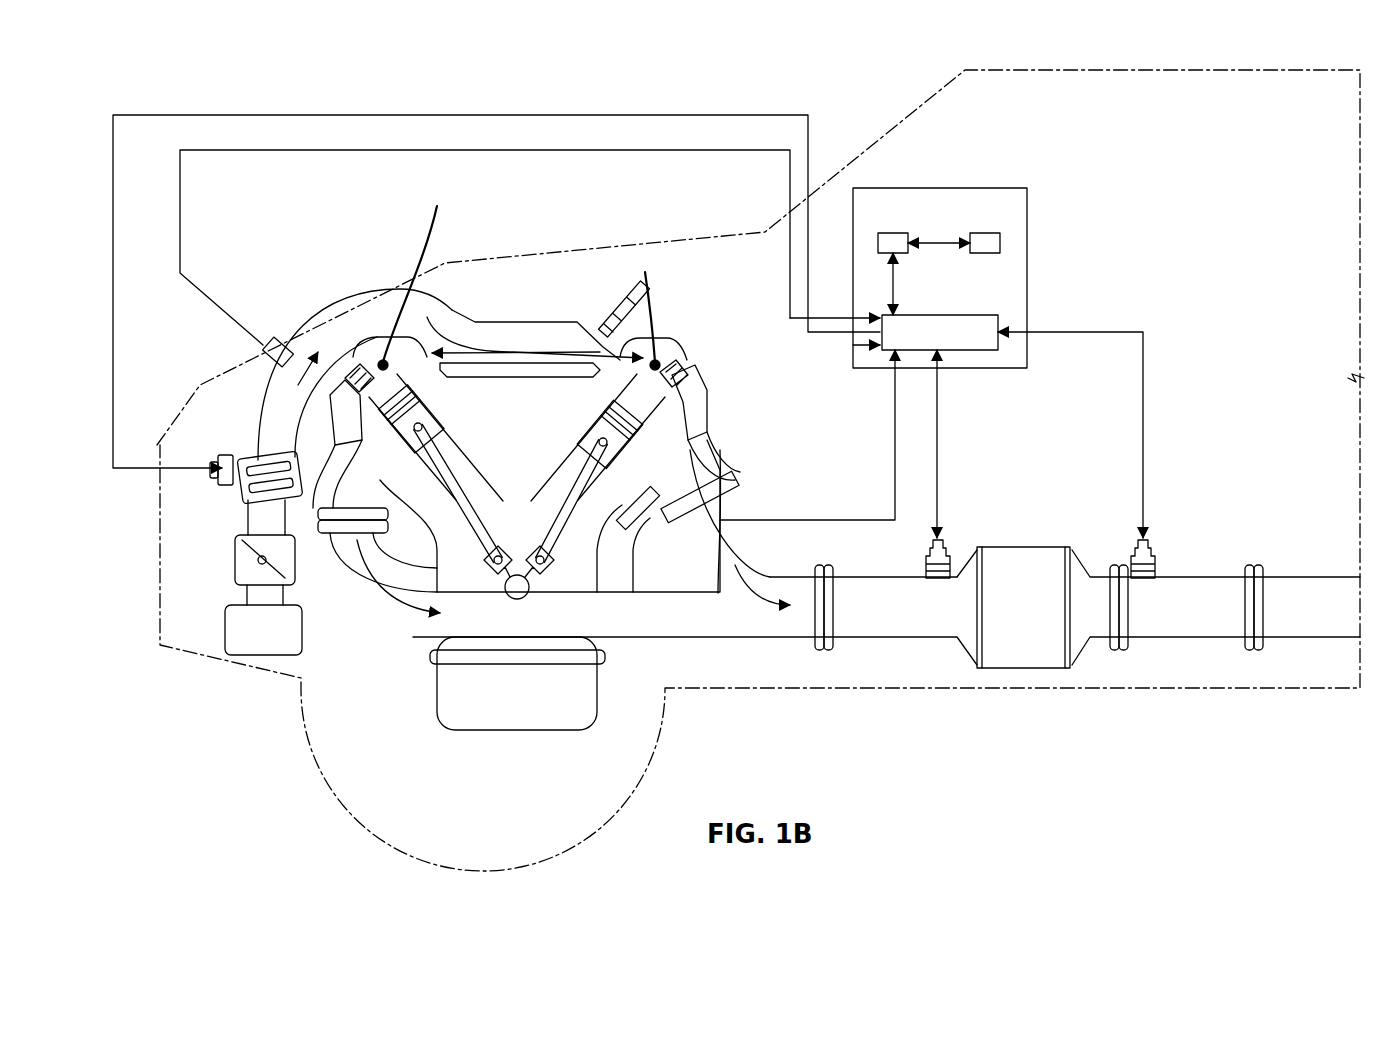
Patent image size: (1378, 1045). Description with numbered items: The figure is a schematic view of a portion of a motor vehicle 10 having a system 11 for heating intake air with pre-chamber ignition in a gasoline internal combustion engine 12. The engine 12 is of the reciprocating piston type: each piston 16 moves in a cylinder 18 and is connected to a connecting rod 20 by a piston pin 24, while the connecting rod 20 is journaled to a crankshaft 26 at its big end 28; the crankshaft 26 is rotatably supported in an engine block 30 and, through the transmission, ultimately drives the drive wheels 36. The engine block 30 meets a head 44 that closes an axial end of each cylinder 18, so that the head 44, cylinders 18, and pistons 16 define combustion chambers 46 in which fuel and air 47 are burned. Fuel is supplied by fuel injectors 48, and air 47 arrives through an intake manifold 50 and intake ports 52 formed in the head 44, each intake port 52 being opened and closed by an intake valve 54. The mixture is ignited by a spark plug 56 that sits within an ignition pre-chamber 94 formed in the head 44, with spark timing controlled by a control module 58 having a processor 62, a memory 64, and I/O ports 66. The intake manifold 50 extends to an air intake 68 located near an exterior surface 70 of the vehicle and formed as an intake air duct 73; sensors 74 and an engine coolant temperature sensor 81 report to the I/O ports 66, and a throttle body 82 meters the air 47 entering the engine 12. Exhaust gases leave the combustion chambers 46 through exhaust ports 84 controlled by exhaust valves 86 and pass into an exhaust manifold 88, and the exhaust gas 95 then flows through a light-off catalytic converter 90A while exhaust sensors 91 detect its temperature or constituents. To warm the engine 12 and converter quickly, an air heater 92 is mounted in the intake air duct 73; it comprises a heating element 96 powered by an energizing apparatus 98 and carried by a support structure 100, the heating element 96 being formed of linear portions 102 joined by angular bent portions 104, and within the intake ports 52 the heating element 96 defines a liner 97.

The motor vehicle 10 is at (716, 232).
The system for heating intake air with pre-chamber ignition 11 is at (272, 196).
The internal combustion engine 12 is at (505, 318).
The piston 16 is at (658, 470).
The cylinder 18 is at (578, 452).
The connecting rod 20 is at (563, 480).
The piston pin 24 is at (557, 425).
The crankshaft 26 is at (522, 598).
The connecting rod big end 28 is at (498, 548).
The engine block 30 is at (437, 590).
The drive wheels 36 is at (298, 703).
The head 44 is at (350, 433).
The combustion chamber 46 is at (736, 434).
The air 47 is at (450, 320).
The fuel injector 48 is at (630, 290).
The intake manifold 50 is at (527, 320).
The intake port 52 is at (384, 358).
The intake valve 54 is at (382, 358).
The spark plug 56 is at (345, 338).
The control module 58 is at (1030, 282).
The processor 62 is at (893, 233).
The memory 64 is at (985, 233).
The I/O ports 66 is at (977, 352).
The air intake 68 is at (338, 332).
The exterior surface 70 is at (162, 625).
The intake air duct 73 is at (205, 410).
The sensors 74 is at (265, 345).
The engine coolant temperature sensor 81 is at (640, 530).
The throttle body 82 is at (237, 568).
The exhaust port 84 is at (340, 355).
The exhaust valve 86 is at (358, 378).
The exhaust manifold 88 is at (766, 470).
The light-off catalytic converter 90A is at (1050, 668).
The exhaust sensor 91 is at (930, 552).
The air heater 92 is at (235, 445).
The ignition pre-chamber 94 is at (388, 378).
The exhaust gas 95 is at (740, 572).
The heating element 96 is at (247, 496).
The liner 97 is at (523, 270).
The energizing apparatus 98 is at (225, 476).
The support structure 100 is at (237, 552).
The linear portions 102 is at (247, 530).
The angular bent portions 104 is at (218, 468).